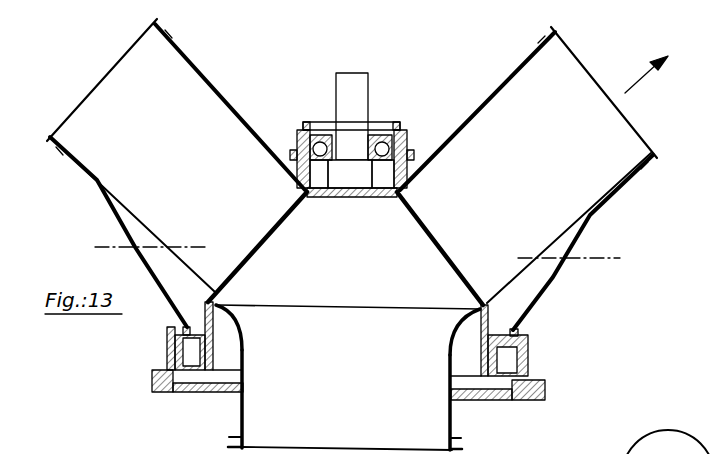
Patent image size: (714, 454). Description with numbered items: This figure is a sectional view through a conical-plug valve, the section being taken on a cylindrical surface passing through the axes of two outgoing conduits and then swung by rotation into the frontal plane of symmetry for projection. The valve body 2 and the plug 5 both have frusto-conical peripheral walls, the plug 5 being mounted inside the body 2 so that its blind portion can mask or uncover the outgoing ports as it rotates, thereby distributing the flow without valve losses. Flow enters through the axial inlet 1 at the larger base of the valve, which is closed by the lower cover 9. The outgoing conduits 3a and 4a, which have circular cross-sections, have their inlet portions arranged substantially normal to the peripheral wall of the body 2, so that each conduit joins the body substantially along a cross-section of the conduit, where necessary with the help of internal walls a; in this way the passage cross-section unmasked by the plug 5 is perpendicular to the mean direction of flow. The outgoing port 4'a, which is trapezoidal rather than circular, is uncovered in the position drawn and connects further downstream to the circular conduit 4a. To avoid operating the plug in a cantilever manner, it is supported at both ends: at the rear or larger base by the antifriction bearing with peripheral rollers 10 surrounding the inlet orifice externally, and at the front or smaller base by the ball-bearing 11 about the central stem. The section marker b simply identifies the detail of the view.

The inlet 1 is at (430, 425).
The valve body 2 is at (265, 288).
The outgoing conduit 3a is at (173, 74).
The outgoing conduit 4a is at (502, 109).
The outgoing port 4'a is at (442, 273).
The plug 5 is at (217, 291).
The lower cover 9 is at (178, 388).
The antifriction bearing with peripheral rollers 10 is at (507, 363).
The ball-bearing 11 is at (402, 129).
The internal walls a is at (175, 262).
The detail section marker b is at (668, 442).